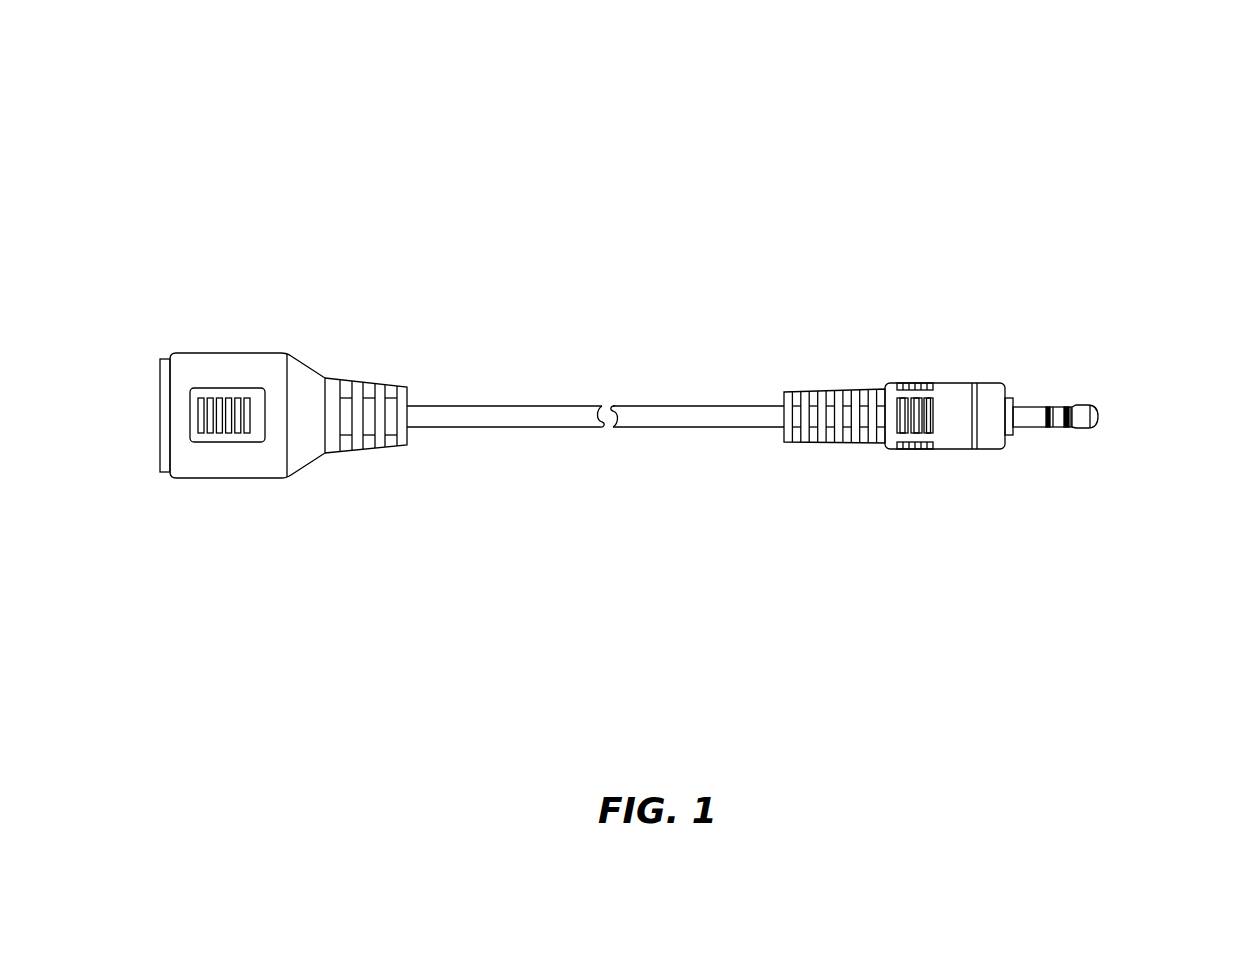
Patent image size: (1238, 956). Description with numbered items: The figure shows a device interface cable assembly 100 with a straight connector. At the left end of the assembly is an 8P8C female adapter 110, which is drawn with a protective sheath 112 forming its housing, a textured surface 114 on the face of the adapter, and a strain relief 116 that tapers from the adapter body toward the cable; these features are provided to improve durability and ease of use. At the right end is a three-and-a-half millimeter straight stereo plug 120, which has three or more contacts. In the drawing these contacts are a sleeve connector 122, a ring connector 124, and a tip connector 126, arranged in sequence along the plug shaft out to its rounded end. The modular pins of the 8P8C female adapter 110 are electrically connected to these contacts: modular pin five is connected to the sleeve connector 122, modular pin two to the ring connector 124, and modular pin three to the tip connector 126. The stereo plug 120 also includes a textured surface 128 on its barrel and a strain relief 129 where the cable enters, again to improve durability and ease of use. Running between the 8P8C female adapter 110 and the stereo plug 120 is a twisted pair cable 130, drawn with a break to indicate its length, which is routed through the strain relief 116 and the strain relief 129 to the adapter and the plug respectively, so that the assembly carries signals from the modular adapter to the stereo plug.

The device interface cable assembly 100 is at (162, 84).
The 8P8C female adapter 110 is at (160, 333).
The protective sheath 112 is at (238, 480).
The textured surface 114 is at (257, 412).
The strain relief 116 is at (390, 447).
The 3.5 mm straight stereo plug 120 is at (1092, 333).
The sleeve connector 122 is at (1032, 418).
The ring connector 124 is at (1055, 410).
The tip connector 126 is at (1087, 418).
The textured surface 128 is at (905, 448).
The strain relief 129 is at (787, 437).
The twisted pair cable 130 is at (877, 563).